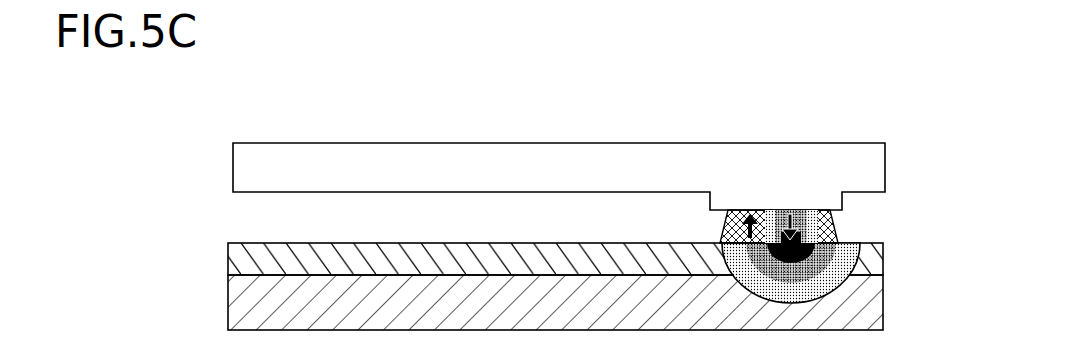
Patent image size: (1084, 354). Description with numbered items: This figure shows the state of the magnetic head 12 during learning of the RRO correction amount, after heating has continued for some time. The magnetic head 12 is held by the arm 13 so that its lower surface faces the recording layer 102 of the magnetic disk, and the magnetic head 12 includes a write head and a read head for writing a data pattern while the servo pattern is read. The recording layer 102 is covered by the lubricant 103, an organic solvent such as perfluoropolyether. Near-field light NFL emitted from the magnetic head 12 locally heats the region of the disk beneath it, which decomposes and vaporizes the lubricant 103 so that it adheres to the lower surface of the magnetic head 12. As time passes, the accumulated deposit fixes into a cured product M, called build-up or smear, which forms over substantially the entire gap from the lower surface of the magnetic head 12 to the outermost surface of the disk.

The arm 13 is at (343, 138).
The magnetic head 12 is at (734, 214).
The near-field light NFL is at (823, 223).
The cured product M is at (839, 237).
The lubricant 103 is at (885, 263).
The recording layer 102 is at (885, 302).